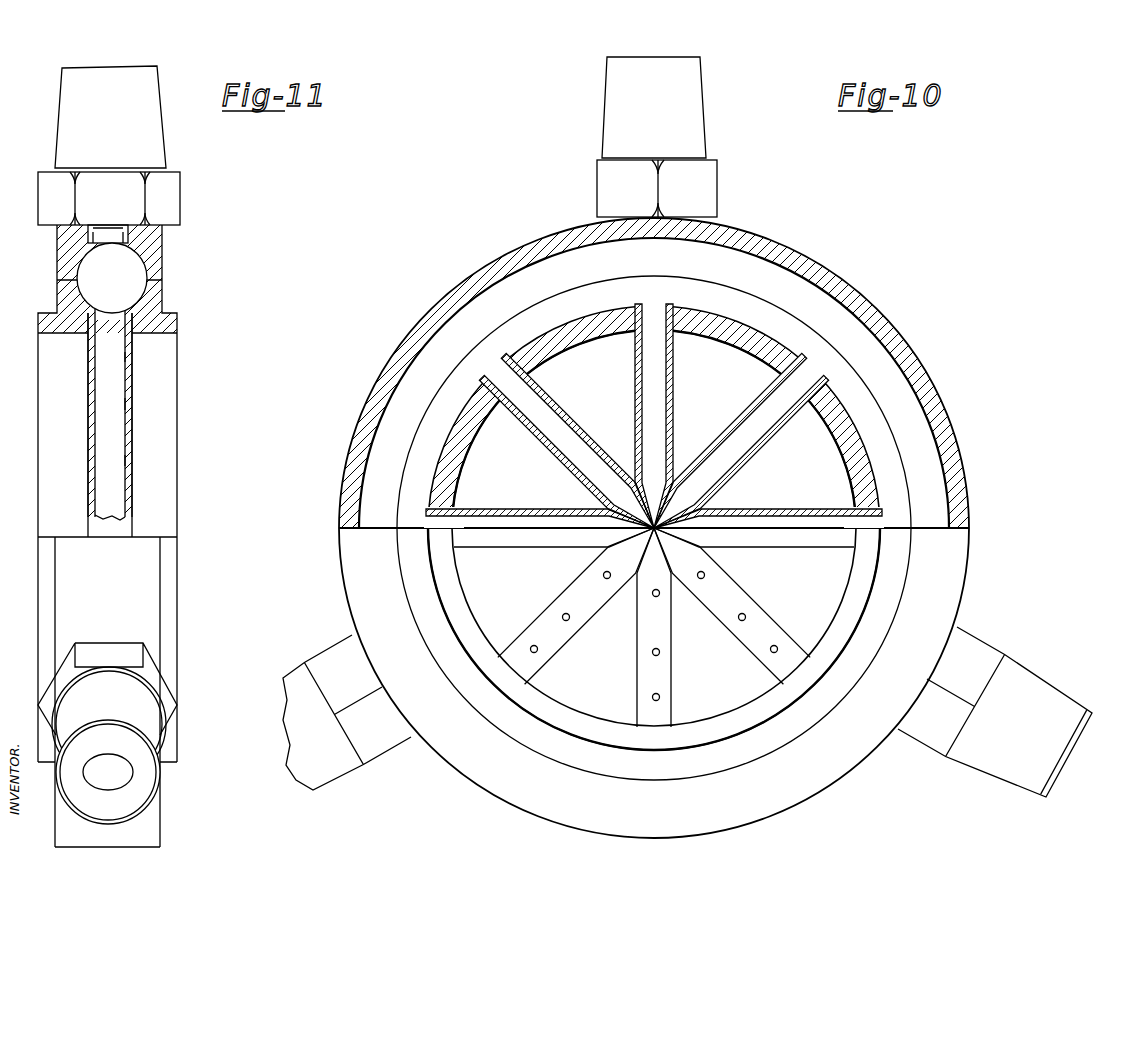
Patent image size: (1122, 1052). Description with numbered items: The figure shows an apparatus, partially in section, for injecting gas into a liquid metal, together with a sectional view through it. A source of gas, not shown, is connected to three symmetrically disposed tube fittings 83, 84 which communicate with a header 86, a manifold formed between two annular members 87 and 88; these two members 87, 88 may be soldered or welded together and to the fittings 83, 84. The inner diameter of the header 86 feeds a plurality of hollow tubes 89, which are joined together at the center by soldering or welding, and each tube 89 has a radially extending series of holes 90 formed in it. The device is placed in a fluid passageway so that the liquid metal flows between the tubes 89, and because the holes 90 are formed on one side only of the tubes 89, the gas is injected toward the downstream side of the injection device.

In FIG. 11, the tube fitting 83 is at (148, 733).
In FIG. 11, the tube fitting 84 is at (133, 170).
In FIG. 10, the tube fitting 84 is at (603, 129).
In FIG. 11, the header 86 is at (123, 280).
In FIG. 10, the header 86 is at (765, 268).
In FIG. 11, the annular member 87 is at (153, 299).
In FIG. 11, the annular member 88 is at (62, 298).
In FIG. 10, the hollow tube 89 is at (750, 405).
In FIG. 11, the hole 90 is at (128, 361).
In FIG. 10, the hole 90 is at (603, 575).